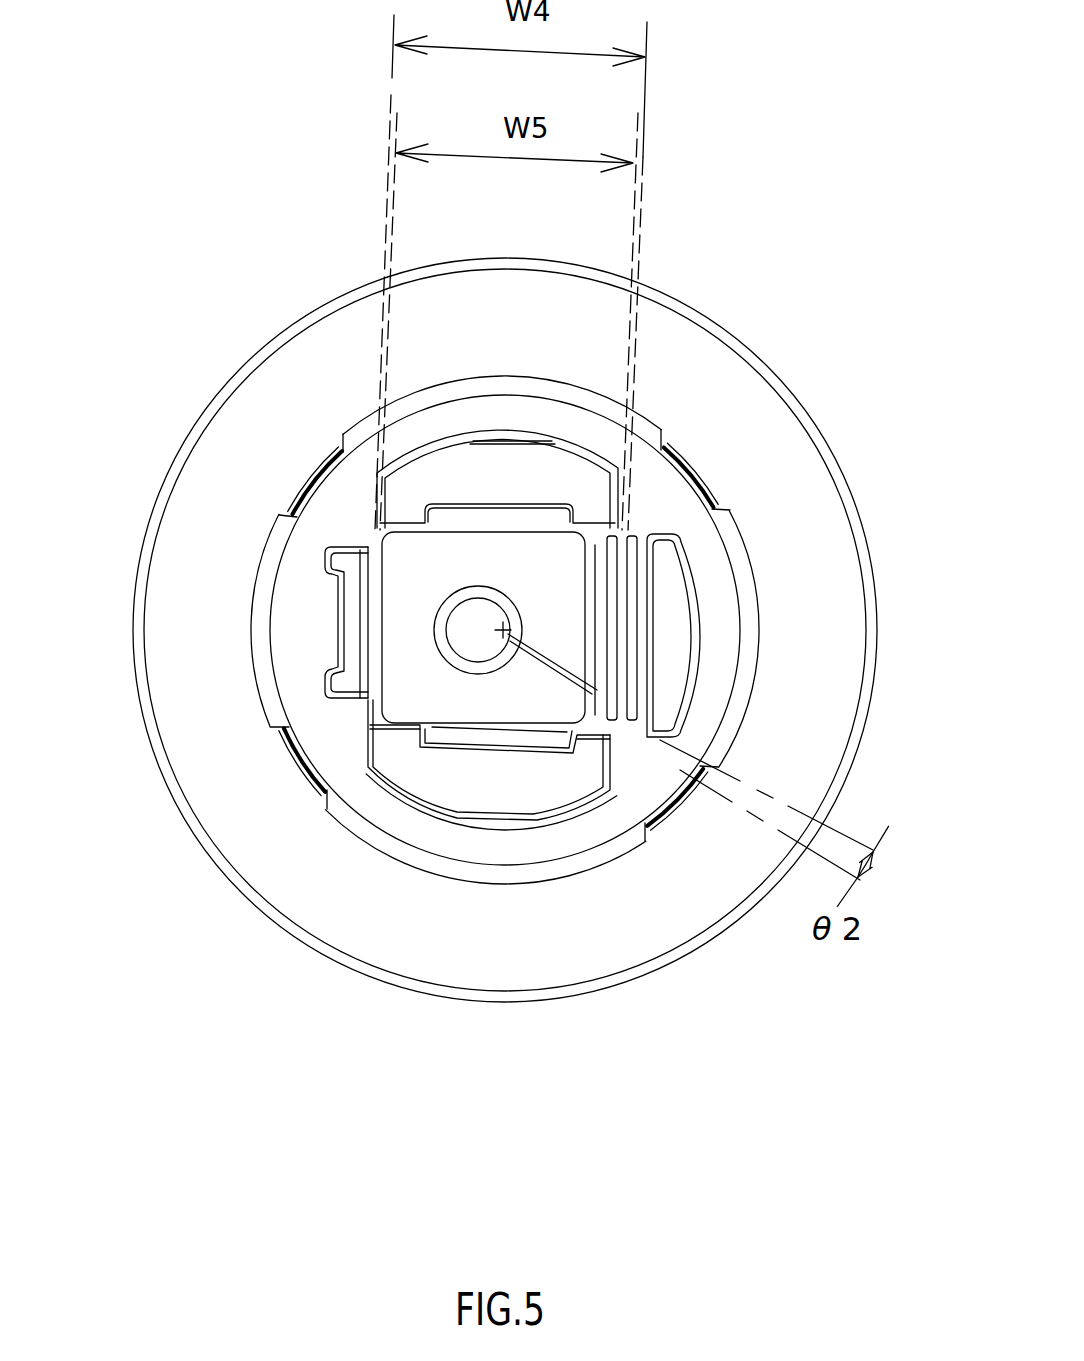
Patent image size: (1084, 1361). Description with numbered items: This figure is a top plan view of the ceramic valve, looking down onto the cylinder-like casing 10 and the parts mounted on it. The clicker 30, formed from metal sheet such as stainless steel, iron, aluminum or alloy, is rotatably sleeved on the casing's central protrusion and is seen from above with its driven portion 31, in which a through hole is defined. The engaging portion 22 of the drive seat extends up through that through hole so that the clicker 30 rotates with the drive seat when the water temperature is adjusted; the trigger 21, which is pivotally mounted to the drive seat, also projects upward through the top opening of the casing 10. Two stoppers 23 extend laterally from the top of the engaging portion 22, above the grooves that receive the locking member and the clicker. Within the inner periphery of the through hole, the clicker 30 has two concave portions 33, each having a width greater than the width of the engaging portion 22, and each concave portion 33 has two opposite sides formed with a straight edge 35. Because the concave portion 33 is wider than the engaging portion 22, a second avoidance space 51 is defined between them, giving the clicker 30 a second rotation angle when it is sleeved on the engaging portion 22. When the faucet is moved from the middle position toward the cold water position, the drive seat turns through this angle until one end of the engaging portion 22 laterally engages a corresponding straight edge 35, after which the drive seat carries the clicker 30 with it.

The casing 10 is at (217, 780).
The trigger 21 is at (450, 700).
The engaging portion 22 is at (667, 600).
The stoppers 23 is at (480, 793).
The clicker 30 is at (293, 660).
The driven portion 31 is at (417, 827).
The concave portions 33 is at (515, 435).
The straight edge 35 is at (653, 527).
The second avoidance space 51 is at (673, 536).